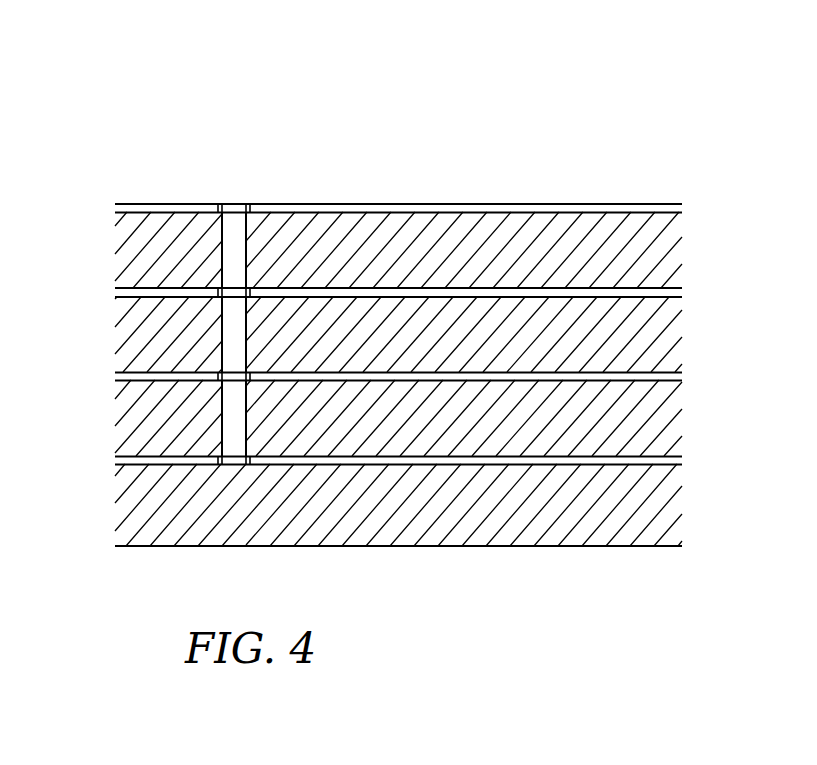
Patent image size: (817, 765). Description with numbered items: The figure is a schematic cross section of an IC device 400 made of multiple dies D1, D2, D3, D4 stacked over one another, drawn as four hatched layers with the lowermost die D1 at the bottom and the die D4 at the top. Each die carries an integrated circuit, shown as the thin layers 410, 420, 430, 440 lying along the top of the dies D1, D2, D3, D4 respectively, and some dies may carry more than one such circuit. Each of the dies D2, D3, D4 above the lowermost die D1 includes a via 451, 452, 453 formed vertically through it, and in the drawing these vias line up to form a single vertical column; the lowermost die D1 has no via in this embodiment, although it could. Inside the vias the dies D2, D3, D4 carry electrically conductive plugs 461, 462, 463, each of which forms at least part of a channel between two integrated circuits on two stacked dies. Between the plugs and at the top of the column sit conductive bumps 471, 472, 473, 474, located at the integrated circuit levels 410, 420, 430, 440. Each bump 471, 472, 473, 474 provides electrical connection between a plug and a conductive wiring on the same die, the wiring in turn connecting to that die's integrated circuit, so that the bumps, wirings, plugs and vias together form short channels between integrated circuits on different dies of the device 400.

The IC device 400 is at (100, 100).
The integrated circuit 410 is at (672, 458).
The integrated circuit 420 is at (670, 375).
The integrated circuit 430 is at (670, 291).
The integrated circuit 440 is at (670, 206).
The die D1 is at (665, 506).
The die D2 is at (665, 423).
The die D3 is at (665, 339).
The die D4 is at (665, 256).
The via 451 is at (212, 412).
The via 452 is at (212, 327).
The via 453 is at (212, 245).
The electrically conductive plug 461 is at (233, 433).
The electrically conductive plug 462 is at (233, 348).
The electrically conductive plug 463 is at (238, 230).
The conductive bump 471 is at (237, 461).
The conductive bump 472 is at (238, 377).
The conductive bump 473 is at (238, 293).
The conductive bump 474 is at (233, 207).